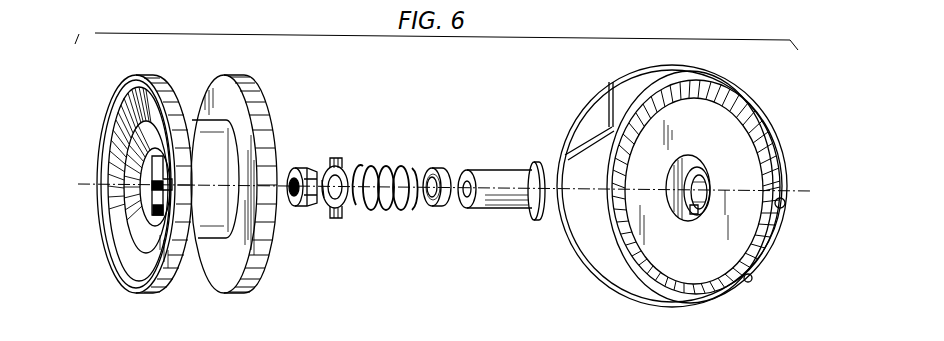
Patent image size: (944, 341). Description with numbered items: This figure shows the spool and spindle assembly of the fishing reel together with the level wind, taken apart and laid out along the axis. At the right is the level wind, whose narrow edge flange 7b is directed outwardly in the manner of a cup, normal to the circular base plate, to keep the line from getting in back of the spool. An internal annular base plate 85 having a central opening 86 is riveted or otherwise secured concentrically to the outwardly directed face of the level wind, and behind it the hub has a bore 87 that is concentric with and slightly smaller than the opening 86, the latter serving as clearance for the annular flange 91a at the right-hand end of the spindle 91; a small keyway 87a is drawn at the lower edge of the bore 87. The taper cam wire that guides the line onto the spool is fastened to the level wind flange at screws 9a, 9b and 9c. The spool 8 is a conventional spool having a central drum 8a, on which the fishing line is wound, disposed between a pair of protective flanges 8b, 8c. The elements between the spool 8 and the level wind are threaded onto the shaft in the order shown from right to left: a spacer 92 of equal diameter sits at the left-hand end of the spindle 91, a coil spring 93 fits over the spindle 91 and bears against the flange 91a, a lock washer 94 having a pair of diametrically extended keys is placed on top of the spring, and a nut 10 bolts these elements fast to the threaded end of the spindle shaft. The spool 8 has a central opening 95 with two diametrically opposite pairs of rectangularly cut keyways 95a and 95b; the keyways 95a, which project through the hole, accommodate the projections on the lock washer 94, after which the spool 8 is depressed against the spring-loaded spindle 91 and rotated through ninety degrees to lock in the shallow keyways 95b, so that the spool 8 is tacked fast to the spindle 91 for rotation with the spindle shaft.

The edge flange 7b is at (760, 118).
The spool 8 is at (193, 316).
The central drum 8a is at (237, 155).
The protective flange 8b is at (142, 288).
The rear spool flange 8c is at (232, 92).
The screw 9a is at (784, 207).
The screw 9b is at (752, 280).
The screw 9c is at (614, 134).
The nut 10 is at (302, 169).
The internal annular base plate 85 is at (705, 272).
The central opening 86 is at (675, 168).
The bore 87 is at (707, 187).
The keyway 87a is at (695, 220).
The spindle 91 is at (487, 170).
The annular flange 91a is at (530, 160).
The spacer 92 is at (434, 169).
The coil spring 93 is at (383, 170).
The lock washer 94 is at (338, 158).
The spool shaft hole 95 is at (160, 181).
The keyways 95a is at (153, 213).
The shallow keyways 95b is at (152, 186).